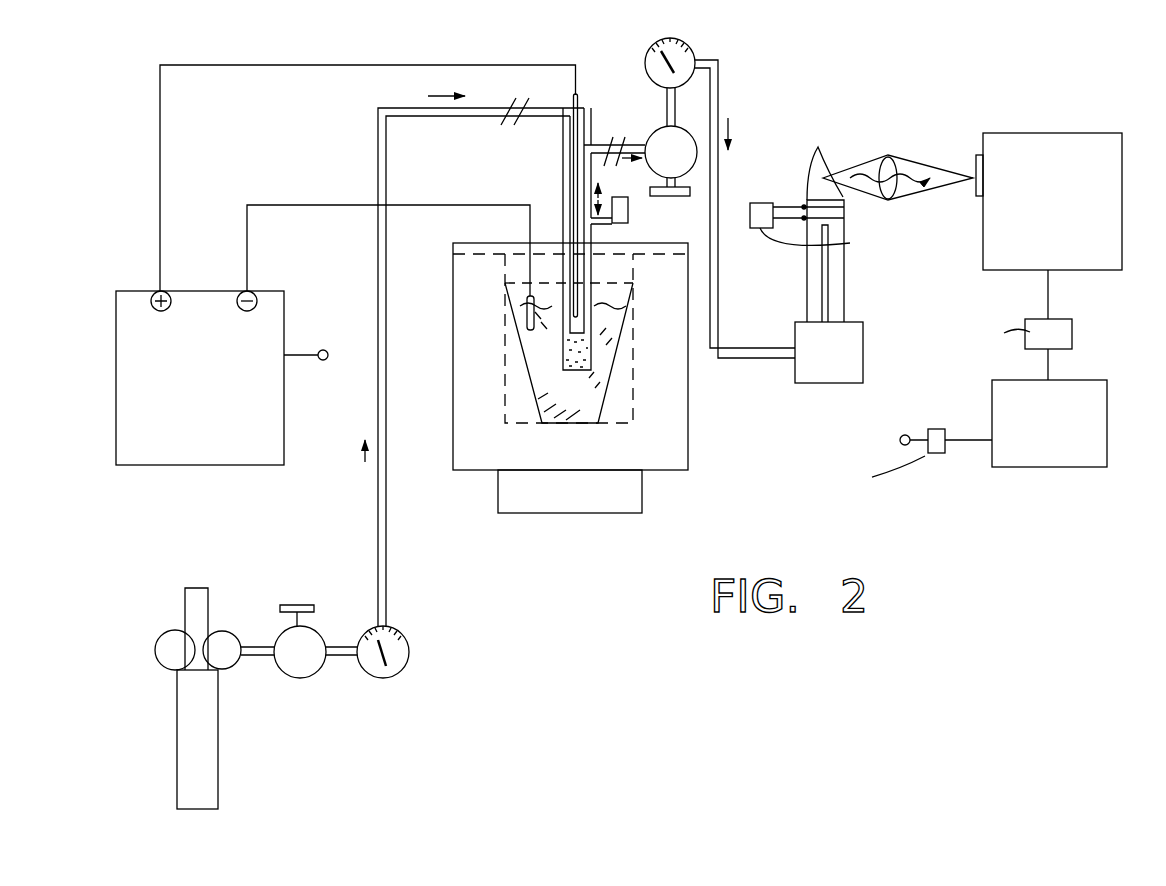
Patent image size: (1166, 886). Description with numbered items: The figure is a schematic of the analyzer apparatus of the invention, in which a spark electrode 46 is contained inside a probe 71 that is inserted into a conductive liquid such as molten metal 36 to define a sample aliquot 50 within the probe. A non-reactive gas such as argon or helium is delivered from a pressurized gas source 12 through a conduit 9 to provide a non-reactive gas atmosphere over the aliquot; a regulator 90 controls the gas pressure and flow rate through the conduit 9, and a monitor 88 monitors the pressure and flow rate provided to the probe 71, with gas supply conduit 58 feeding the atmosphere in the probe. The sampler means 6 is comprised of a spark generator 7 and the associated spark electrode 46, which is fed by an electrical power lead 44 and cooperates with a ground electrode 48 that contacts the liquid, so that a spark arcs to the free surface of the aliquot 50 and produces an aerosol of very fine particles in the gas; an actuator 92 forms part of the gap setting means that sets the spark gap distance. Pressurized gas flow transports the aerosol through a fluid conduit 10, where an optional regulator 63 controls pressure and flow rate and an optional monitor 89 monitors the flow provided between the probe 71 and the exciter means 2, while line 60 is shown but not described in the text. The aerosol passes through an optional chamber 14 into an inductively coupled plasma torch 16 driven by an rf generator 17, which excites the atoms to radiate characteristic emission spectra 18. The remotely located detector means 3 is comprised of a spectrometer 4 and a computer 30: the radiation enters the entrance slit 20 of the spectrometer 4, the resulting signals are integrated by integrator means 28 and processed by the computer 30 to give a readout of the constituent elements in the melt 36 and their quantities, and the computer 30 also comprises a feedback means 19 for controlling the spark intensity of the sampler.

The exciter means 2 is at (858, 313).
The detector means 3 is at (1068, 123).
The spectrometer 4 is at (1003, 273).
The sampler means 6 is at (151, 210).
The spark generator 7 is at (284, 446).
The conduit 9 is at (386, 517).
The fluid conduit 10 is at (760, 361).
The pressurized gas source 12 is at (218, 762).
The chamber 14 is at (825, 385).
The inductively coupled plasma torch 16 is at (825, 162).
The rf generator 17 is at (764, 201).
The characteristic emission spectra 18 is at (908, 180).
The feedback means 19 is at (938, 456).
The entrance slit 20 is at (973, 181).
The integrator means 28 is at (1072, 339).
The computer 30 is at (1100, 444).
The molten metal 36 is at (592, 403).
The electrical power lead 44 is at (578, 81).
The spark electrode 46 is at (590, 294).
The ground electrode 48 is at (525, 315).
The sample aliquot 50 is at (588, 358).
The conduit 58 is at (557, 104).
The gas outlet line 60 is at (593, 144).
The regulator 63 is at (656, 133).
The probe 71 is at (563, 147).
The monitor 88 is at (407, 641).
The monitor 89 is at (697, 53).
The regulator 90 is at (318, 630).
The actuator 92 is at (627, 214).